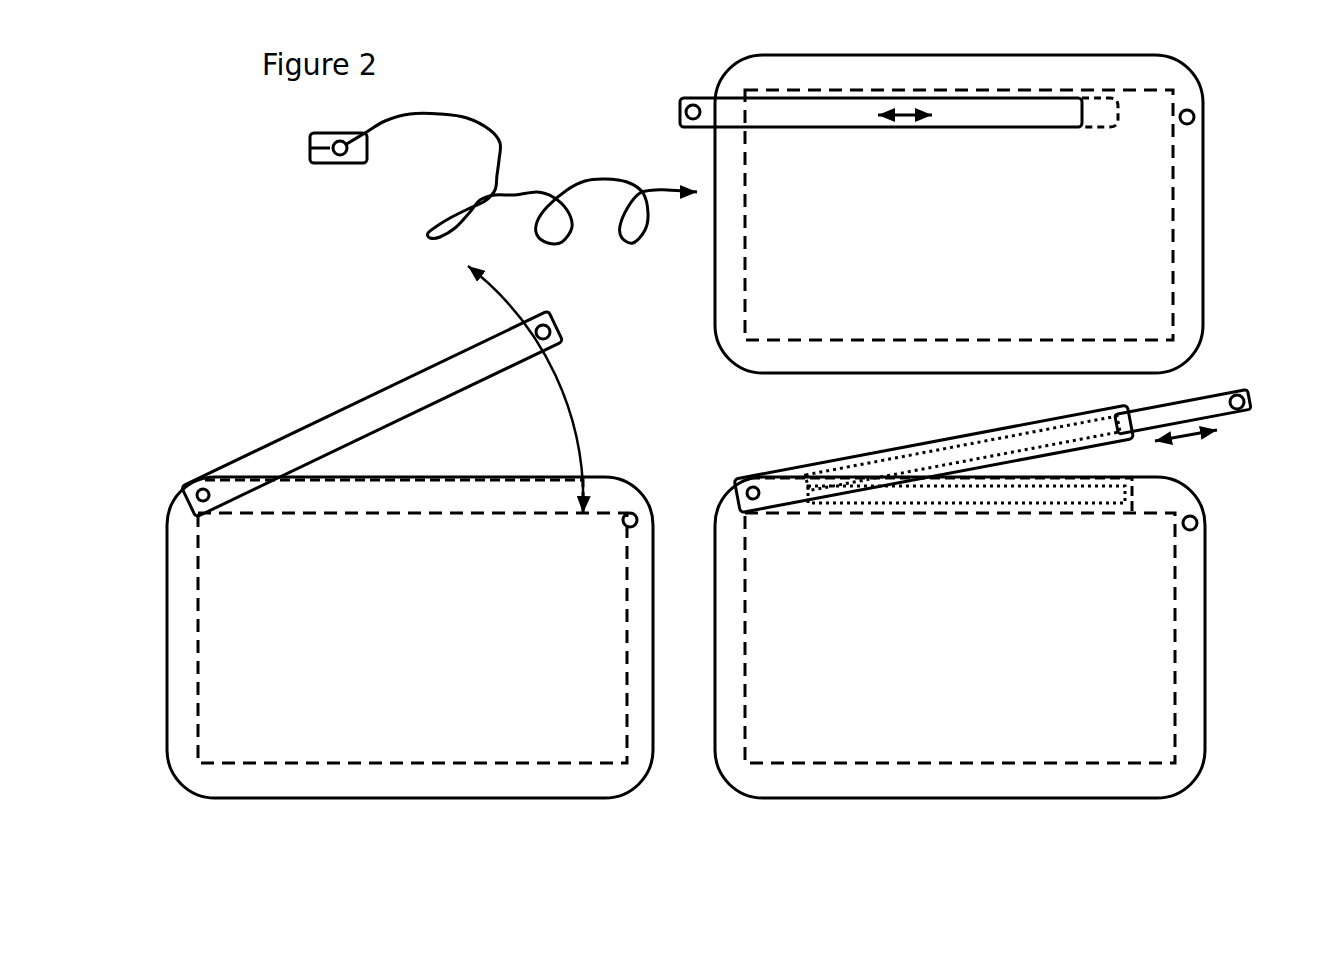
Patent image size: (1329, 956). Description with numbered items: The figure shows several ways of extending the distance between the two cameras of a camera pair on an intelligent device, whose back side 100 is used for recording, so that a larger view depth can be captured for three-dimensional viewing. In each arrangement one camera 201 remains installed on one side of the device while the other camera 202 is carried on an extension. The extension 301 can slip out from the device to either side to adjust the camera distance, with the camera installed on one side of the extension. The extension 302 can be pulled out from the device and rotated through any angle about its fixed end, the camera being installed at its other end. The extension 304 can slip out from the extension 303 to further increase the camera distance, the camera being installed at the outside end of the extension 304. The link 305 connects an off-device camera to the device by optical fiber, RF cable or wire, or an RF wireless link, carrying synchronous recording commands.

The back side 100 is at (686, 426).
The camera 201 is at (1180, 117).
The camera 202 is at (310, 150).
The extension 301 is at (899, 138).
The extension 302 is at (382, 391).
The extension 303 is at (933, 459).
The extension 304 is at (1183, 434).
The link 305 is at (521, 178).